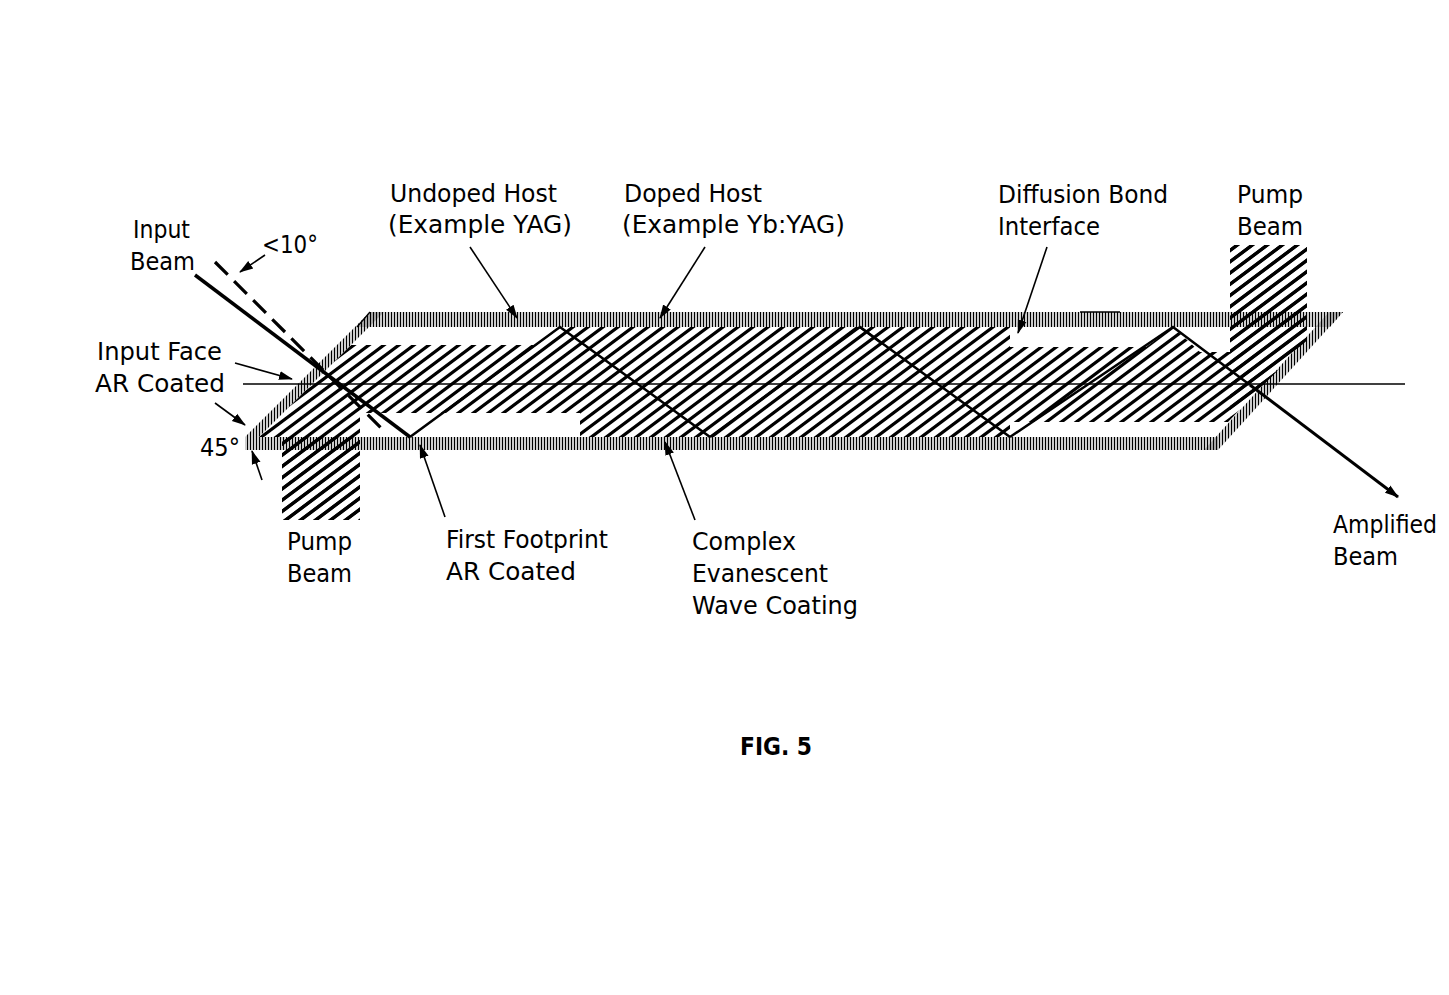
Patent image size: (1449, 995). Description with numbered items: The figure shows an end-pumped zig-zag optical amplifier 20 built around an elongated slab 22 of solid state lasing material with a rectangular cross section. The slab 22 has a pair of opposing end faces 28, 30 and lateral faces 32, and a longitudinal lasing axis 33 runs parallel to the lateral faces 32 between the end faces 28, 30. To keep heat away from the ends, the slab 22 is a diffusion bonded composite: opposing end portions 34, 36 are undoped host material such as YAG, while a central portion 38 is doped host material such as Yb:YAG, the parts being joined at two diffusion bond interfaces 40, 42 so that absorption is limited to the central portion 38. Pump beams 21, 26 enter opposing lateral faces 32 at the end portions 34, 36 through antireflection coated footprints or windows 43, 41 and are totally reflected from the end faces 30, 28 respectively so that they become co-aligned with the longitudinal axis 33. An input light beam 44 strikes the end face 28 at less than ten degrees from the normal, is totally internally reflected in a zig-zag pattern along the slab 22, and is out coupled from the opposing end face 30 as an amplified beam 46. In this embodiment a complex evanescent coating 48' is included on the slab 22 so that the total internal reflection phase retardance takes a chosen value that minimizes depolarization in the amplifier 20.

The optical amplifier 20 is at (925, 142).
The pump beam 21 is at (1333, 208).
The elongated slab 22 is at (403, 315).
The pump beam 26 is at (275, 553).
The end face 28 is at (357, 323).
The end face 30 is at (1322, 358).
The lateral face 32 is at (1093, 315).
The longitudinal axis 33 is at (1388, 385).
The end portion 34 is at (1183, 280).
The end portion 36 is at (367, 266).
The central portion 38 is at (882, 250).
The diffusion bond interface 40 is at (988, 317).
The window 41 is at (390, 452).
The diffusion bond interface 42 is at (598, 316).
The window 43 is at (1150, 315).
The input light beam 44 is at (200, 278).
The amplified beam 46 is at (1363, 465).
The complex evanescent coating 48' is at (731, 473).